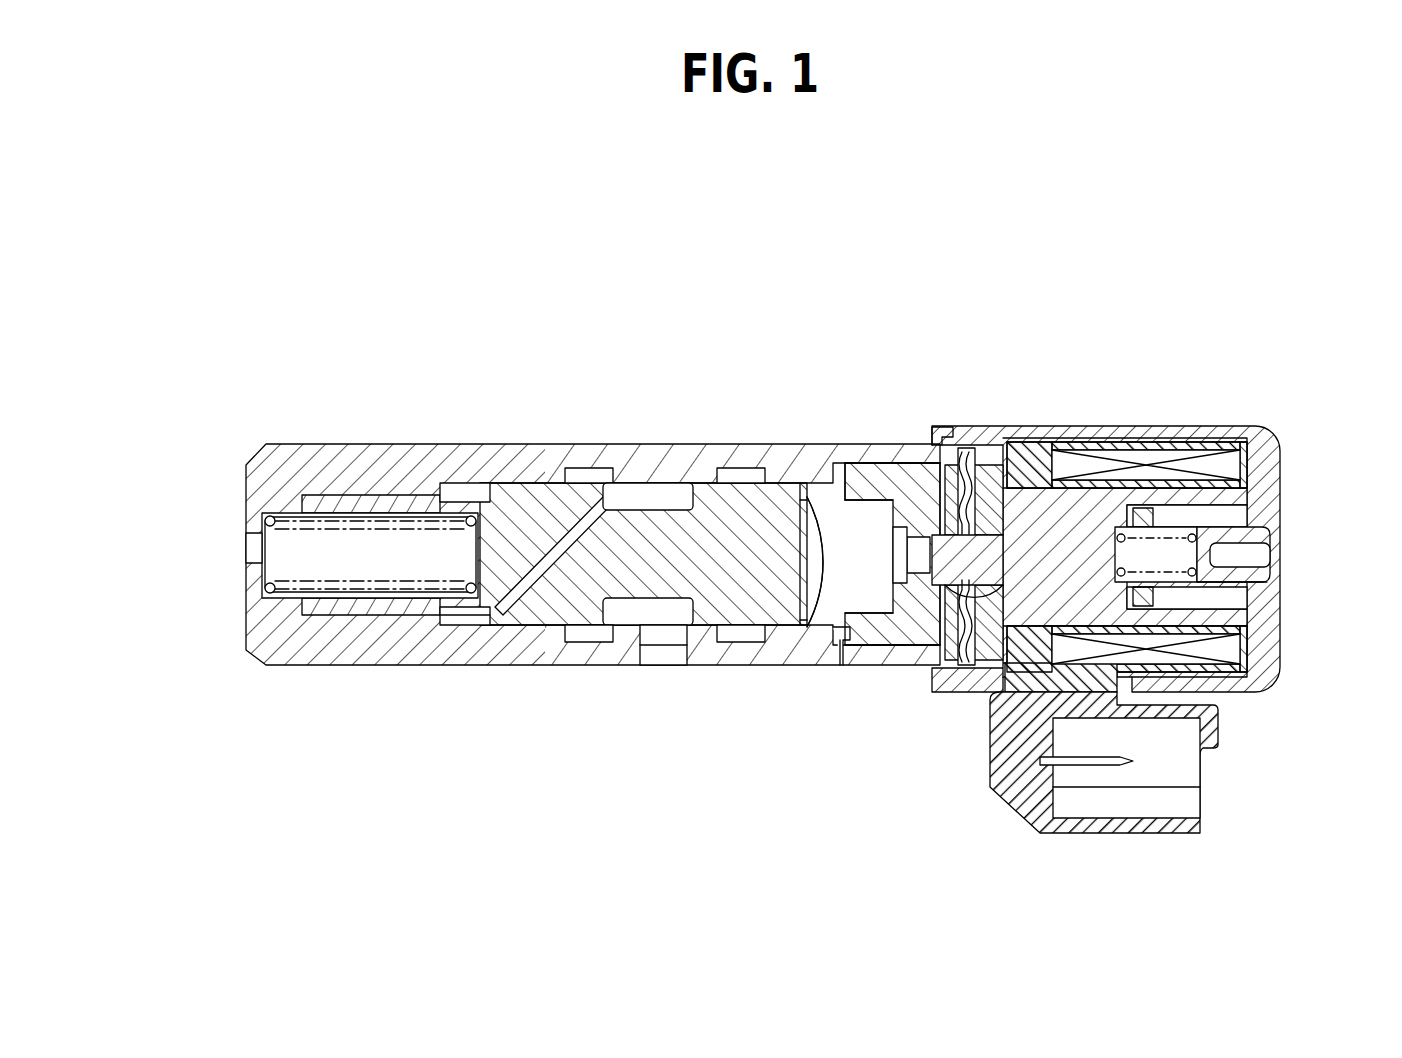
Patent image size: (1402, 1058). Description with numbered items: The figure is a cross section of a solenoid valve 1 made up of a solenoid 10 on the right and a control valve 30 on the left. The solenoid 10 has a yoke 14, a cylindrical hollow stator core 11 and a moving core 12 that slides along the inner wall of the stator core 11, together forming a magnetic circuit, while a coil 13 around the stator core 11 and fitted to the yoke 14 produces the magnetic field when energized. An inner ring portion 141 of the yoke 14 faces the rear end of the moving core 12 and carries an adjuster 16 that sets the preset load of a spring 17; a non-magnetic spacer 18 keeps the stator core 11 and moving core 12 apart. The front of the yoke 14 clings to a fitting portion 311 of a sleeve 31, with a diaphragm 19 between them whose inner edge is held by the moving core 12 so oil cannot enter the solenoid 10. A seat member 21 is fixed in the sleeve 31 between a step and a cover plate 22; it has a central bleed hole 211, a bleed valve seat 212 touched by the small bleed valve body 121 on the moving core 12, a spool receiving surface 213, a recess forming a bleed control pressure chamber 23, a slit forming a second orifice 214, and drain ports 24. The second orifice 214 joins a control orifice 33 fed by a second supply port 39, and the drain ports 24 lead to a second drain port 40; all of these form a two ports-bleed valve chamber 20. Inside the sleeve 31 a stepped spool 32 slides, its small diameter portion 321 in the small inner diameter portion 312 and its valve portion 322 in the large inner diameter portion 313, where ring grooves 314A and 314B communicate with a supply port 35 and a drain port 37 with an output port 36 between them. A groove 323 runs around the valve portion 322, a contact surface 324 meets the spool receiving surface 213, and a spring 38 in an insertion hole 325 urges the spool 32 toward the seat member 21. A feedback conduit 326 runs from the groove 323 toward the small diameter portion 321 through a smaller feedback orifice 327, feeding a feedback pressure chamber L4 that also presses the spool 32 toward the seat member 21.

The solenoid valve 1 is at (812, 312).
The solenoid 10 is at (1005, 405).
The stator core 11 is at (1088, 493).
The moving core 12 is at (1027, 525).
The coil 13 is at (1190, 463).
The yoke 14 is at (1257, 463).
The inner ring portion 141 is at (1130, 483).
The adjuster 16 is at (1260, 537).
The spring 17 is at (1240, 558).
The spacer 18 is at (1240, 597).
The diaphragm 19 is at (963, 447).
The two ports-bleed valve chamber 20 is at (885, 700).
The seat member 21 is at (875, 465).
The bleed hole 211 is at (903, 498).
The bleed valve seat 212 is at (917, 537).
The spool receiving surface 213 is at (840, 465).
The second orifice 214 is at (860, 637).
The cover plate 22 is at (967, 607).
The bleed control pressure chamber 23 is at (893, 561).
The drain ports 24 is at (945, 605).
The control valve 30 is at (522, 432).
The sleeve 31 is at (672, 470).
The fitting portion 311 is at (956, 432).
The small inner diameter portion 312 is at (350, 507).
The large inner diameter portion 313 is at (485, 483).
The ring groove 314A is at (650, 482).
The ring groove 314B is at (780, 483).
The spool 32 is at (722, 513).
The small diameter portion 321 is at (385, 610).
The valve portion 322 is at (557, 610).
The groove 323 is at (657, 610).
The contact surface 324 is at (790, 640).
The insertion hole 325 is at (307, 593).
The feedback conduit 326 is at (555, 548).
The feedback orifice 327 is at (505, 617).
The control orifice 33 is at (833, 640).
The supply port 35 is at (595, 650).
The output port 36 is at (668, 653).
The drain port 37 is at (738, 653).
The spring 38 is at (352, 605).
The second supply port 39 is at (840, 655).
The second drain port 40 is at (927, 633).
The bleed valve body 121 is at (993, 605).
The feedback pressure chamber L4 is at (460, 613).